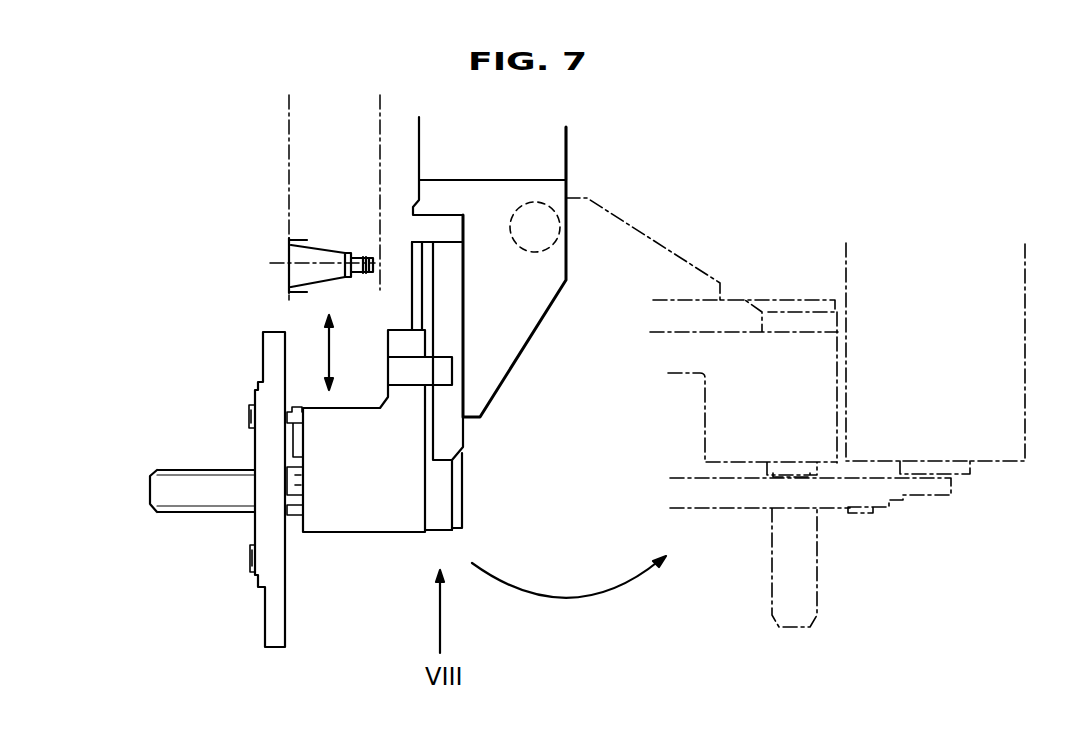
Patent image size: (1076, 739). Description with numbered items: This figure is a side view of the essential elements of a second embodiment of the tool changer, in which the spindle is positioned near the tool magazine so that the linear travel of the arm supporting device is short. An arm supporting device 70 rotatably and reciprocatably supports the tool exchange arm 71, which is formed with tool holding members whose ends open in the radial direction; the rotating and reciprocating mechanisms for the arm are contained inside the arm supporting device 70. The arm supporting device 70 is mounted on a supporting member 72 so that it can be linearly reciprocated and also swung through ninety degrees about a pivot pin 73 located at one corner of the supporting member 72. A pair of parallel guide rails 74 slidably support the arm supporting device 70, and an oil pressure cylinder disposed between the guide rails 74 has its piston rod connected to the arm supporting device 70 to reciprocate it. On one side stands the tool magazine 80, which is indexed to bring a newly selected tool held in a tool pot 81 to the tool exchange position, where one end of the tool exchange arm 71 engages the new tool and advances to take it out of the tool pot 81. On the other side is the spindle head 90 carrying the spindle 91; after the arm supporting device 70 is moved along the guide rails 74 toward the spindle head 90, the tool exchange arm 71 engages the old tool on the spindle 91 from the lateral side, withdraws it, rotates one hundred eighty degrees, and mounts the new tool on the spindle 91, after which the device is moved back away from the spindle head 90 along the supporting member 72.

The arm supporting device 70 is at (375, 520).
The tool exchange arm 71 is at (268, 611).
The supporting member 72 is at (645, 262).
The pivot pin 73 is at (545, 219).
The guide rails 74 is at (417, 300).
The tool magazine 80 is at (418, 148).
The tool pot 81 is at (320, 253).
The spindle head 90 is at (1022, 291).
The spindle 91 is at (960, 470).